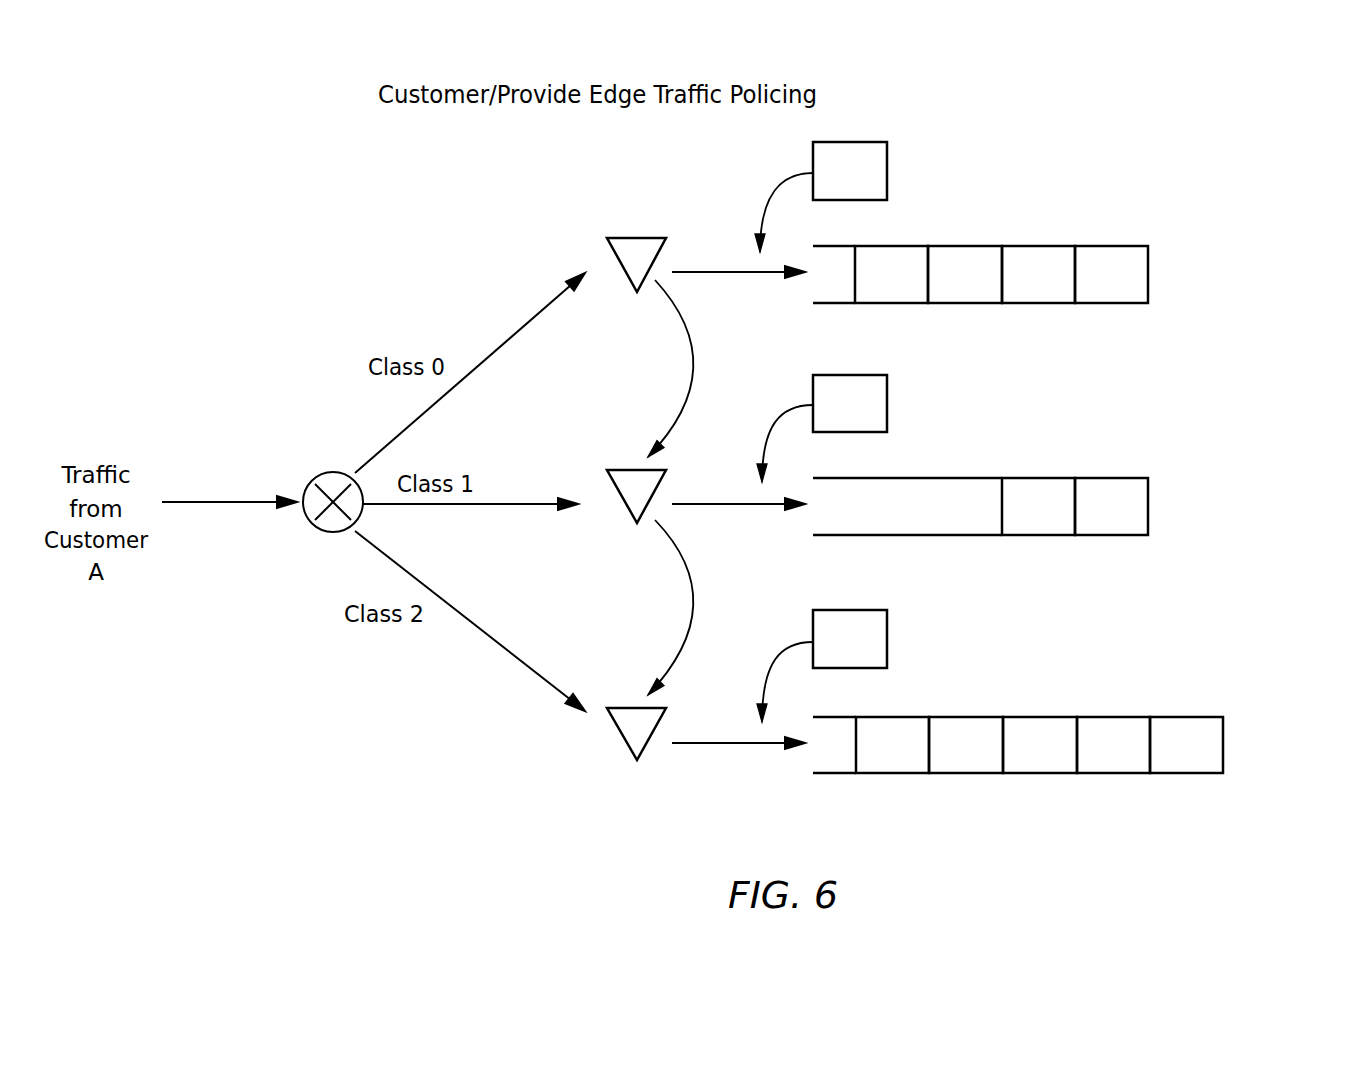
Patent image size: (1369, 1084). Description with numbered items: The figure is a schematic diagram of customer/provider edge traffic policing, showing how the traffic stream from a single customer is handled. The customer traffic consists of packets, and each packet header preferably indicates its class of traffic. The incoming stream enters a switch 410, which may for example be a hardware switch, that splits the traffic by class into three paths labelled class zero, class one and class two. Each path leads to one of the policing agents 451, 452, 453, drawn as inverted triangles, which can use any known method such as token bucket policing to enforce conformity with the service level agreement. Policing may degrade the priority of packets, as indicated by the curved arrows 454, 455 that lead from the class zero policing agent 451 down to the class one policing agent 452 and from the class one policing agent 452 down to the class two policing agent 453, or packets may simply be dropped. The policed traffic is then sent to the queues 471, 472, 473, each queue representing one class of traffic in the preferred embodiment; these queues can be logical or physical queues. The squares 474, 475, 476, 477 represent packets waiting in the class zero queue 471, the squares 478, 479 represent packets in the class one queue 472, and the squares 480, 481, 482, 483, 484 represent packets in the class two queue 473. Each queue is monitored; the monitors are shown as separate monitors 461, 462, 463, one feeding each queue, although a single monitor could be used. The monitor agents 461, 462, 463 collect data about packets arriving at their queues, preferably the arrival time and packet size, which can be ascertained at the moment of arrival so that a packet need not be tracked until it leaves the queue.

The switch 410 is at (289, 515).
The policing agent 451 is at (606, 250).
The policing agent 452 is at (606, 475).
The policing agent 453 is at (604, 700).
The arrow 454 is at (724, 368).
The arrow 455 is at (732, 607).
The monitor 461 is at (821, 197).
The monitor 462 is at (822, 428).
The monitor 463 is at (822, 666).
The queue 471 is at (1036, 232).
The queue 472 is at (1038, 473).
The queue 473 is at (1081, 708).
The packet 474 is at (1111, 274).
The packet 475 is at (1038, 274).
The packet 476 is at (965, 274).
The packet 477 is at (891, 274).
The packet 478 is at (1111, 506).
The packet 479 is at (1038, 506).
The packet 480 is at (1186, 745).
The packet 481 is at (1113, 745).
The packet 482 is at (1040, 745).
The packet 483 is at (966, 745).
The packet 484 is at (892, 745).